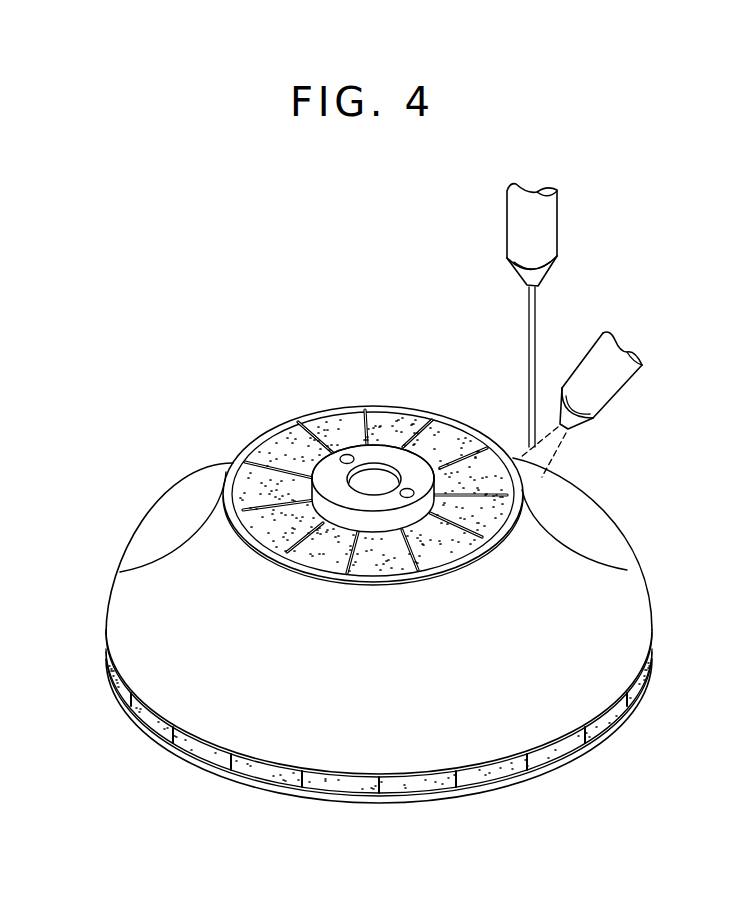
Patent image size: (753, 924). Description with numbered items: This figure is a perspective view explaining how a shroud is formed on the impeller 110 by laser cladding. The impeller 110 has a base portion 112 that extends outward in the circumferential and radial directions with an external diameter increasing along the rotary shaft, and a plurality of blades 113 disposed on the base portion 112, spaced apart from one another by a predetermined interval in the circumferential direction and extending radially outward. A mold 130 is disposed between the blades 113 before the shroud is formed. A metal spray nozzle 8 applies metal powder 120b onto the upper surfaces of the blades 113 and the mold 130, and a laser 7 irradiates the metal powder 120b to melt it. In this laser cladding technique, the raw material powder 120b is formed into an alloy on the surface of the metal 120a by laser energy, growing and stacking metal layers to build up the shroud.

The laser 7 is at (512, 228).
The metal spray nozzle 8 is at (620, 380).
The impeller 110 is at (351, 609).
The base portion 112 is at (192, 748).
The blades 113 is at (162, 723).
The metal 120a is at (135, 603).
The metal powder 120b is at (557, 452).
The mold 130 is at (597, 717).